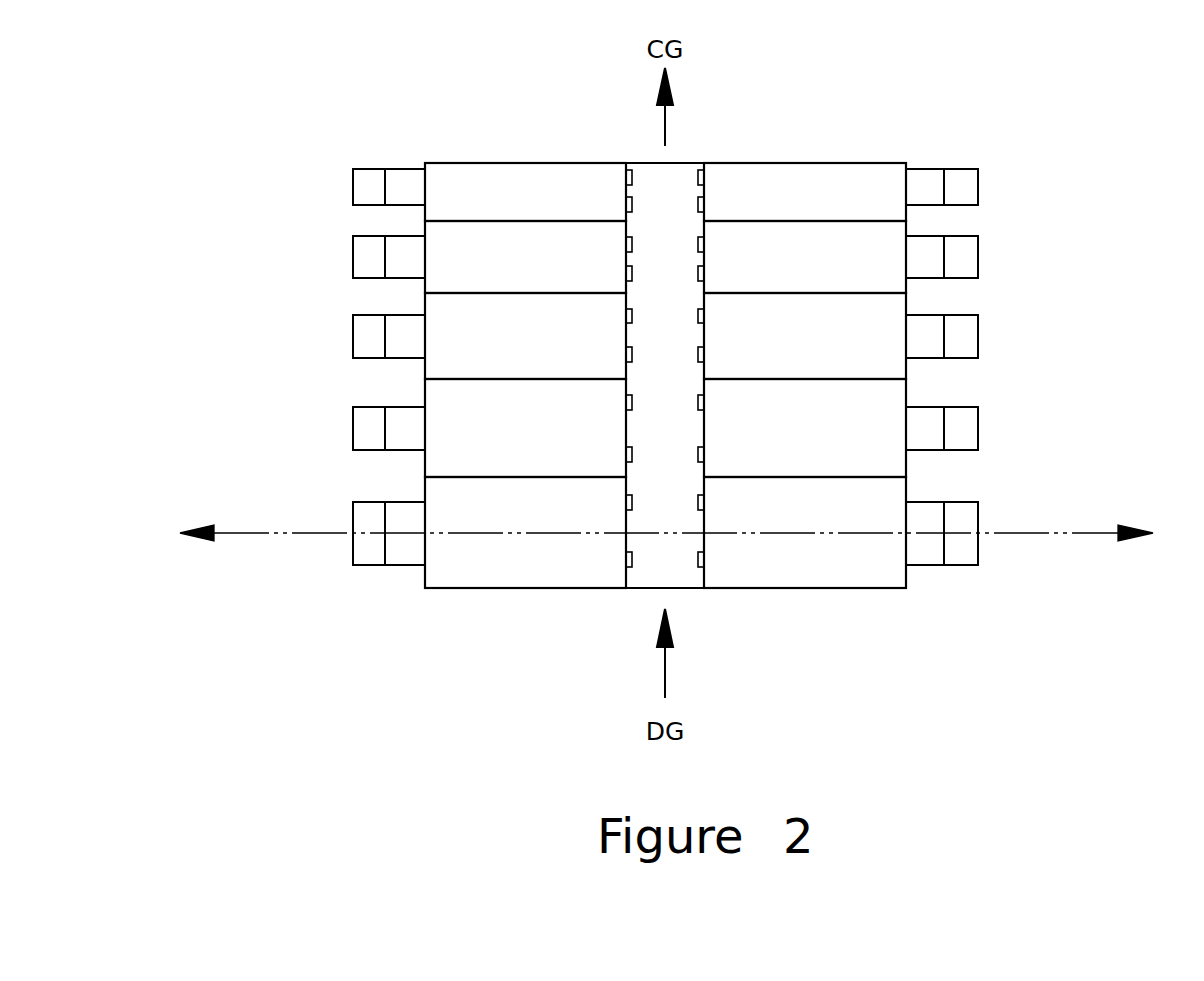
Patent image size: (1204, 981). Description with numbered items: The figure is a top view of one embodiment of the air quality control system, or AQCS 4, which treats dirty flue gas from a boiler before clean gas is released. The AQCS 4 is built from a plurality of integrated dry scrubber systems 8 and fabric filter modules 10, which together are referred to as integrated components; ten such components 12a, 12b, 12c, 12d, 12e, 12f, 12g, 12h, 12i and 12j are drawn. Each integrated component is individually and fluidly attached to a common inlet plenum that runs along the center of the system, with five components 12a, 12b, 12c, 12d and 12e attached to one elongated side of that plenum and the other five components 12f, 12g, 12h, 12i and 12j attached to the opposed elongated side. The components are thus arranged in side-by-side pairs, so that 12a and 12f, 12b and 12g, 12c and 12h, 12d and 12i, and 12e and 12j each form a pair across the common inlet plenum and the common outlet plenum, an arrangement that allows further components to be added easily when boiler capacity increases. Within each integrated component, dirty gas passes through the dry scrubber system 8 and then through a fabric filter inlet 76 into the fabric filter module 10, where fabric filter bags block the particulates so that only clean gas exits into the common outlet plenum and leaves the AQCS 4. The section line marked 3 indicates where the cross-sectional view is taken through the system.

The section line 3- 3 is at (666, 533).
The air quality control system 4 is at (997, 74).
The dry scrubber system 8 is at (353, 192).
The fabric filter module 10 is at (440, 209).
The integrated component 12a is at (550, 588).
The integrated component 12b is at (425, 380).
The integrated component 12c is at (425, 294).
The integrated component 12d is at (425, 221).
The integrated component 12e is at (552, 163).
The integrated component 12f is at (778, 588).
The integrated component 12g is at (906, 380).
The integrated component 12h is at (906, 294).
The integrated component 12i is at (906, 224).
The integrated component 12j is at (778, 163).
The fabric filter inlet 76 is at (400, 169).